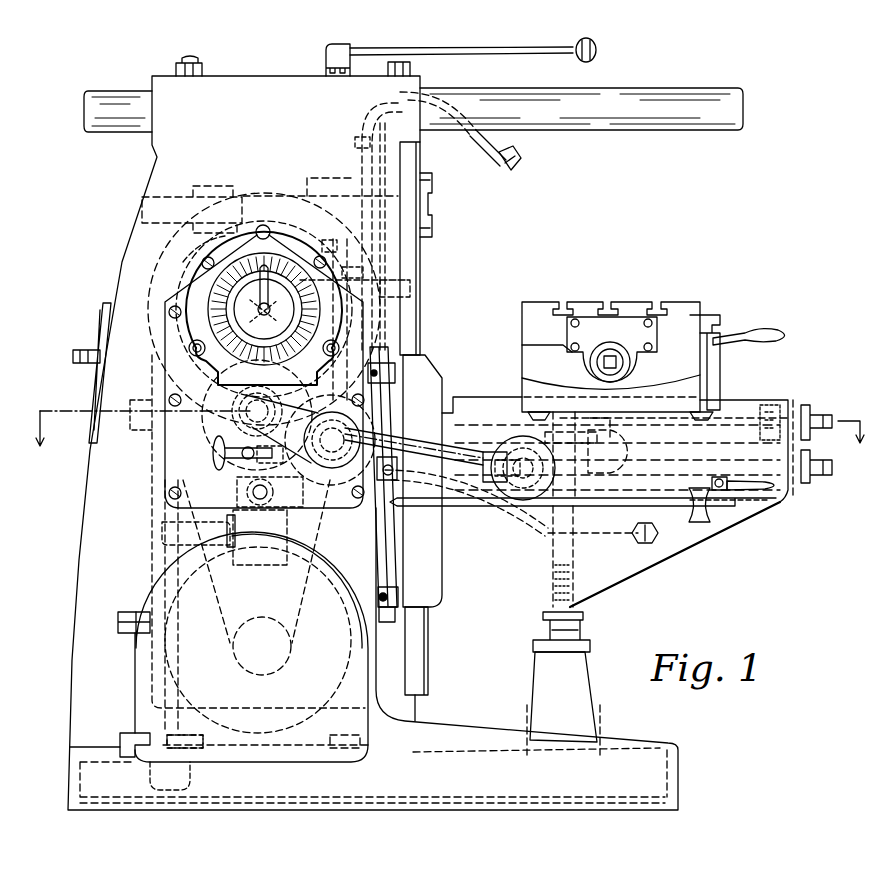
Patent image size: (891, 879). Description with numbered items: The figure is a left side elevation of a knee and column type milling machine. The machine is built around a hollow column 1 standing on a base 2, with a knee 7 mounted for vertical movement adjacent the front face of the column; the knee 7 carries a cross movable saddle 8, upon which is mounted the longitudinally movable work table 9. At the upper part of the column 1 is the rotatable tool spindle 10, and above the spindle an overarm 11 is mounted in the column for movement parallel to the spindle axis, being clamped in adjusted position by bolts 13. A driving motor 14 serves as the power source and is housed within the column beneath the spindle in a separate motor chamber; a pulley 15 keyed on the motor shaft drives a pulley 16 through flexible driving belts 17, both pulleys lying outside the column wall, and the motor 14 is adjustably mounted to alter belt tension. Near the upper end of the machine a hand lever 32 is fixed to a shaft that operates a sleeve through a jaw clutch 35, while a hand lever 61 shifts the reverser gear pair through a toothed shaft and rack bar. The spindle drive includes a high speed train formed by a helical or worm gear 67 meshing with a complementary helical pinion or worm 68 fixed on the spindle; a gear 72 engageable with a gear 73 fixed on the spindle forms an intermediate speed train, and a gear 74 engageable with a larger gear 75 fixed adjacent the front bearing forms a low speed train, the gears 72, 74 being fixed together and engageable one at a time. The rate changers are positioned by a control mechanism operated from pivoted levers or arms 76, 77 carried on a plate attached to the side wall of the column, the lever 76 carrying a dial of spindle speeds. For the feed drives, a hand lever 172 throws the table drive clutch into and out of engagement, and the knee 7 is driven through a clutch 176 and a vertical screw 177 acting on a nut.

The hollow column 1 is at (92, 476).
The base 2 is at (627, 810).
The knee 7 is at (681, 545).
The saddle 8 is at (525, 366).
The work table 9 is at (518, 320).
The tool spindle 10 is at (432, 197).
The overarm 11 is at (648, 120).
The bolt 13 is at (200, 62).
The driving motor 14 is at (207, 745).
The pulley 15 is at (277, 668).
The pulley 16 is at (167, 472).
The flexible driving belts 17 is at (320, 538).
The hand lever 32 is at (470, 52).
The jaw clutch 35 is at (325, 70).
The hand lever 61 is at (100, 322).
The helical or worm gear 67 is at (183, 262).
The helical pinion or worm 68 is at (221, 190).
The gear 72 is at (339, 250).
The gear 73 is at (312, 176).
The gear 74 is at (355, 276).
The gear 75 is at (356, 140).
The pivoted lever or arm 76 is at (284, 246).
The pivoted lever or arm 77 is at (253, 312).
The hand lever 172 is at (776, 334).
The clutch 176 is at (700, 478).
The vertical screw 177 is at (594, 611).